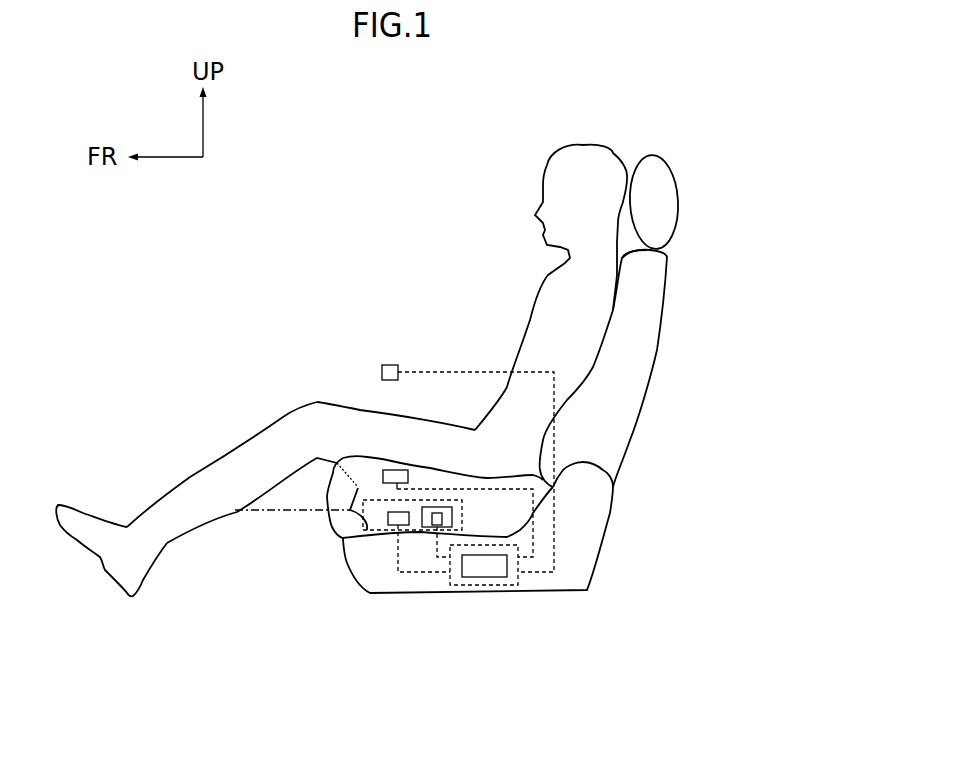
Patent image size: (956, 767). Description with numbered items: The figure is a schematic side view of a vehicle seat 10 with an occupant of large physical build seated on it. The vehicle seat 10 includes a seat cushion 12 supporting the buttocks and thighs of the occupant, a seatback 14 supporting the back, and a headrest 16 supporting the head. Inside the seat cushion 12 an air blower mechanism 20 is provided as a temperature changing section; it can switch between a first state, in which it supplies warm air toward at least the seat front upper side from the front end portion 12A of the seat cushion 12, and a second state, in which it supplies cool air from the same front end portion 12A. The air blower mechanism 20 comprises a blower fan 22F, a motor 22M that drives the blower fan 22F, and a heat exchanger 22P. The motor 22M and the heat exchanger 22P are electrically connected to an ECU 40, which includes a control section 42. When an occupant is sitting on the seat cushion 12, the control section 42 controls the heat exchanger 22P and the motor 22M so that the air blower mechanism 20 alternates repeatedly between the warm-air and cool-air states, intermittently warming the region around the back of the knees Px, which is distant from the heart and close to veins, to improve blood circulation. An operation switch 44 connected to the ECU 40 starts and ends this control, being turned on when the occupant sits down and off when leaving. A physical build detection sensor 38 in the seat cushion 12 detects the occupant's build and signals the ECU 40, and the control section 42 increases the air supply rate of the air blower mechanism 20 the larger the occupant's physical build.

The vehicle seat 10 is at (730, 212).
The seat cushion 12 is at (472, 457).
The front end portion 12A is at (345, 450).
The seatback 14 is at (660, 347).
The headrest 16 is at (677, 188).
The air blower mechanism 20 is at (343, 523).
The blower fan 22F is at (453, 512).
The motor 22M is at (442, 520).
The heat exchanger 22P is at (390, 517).
The physical build detection sensor 38 is at (408, 477).
The ECU 40 is at (503, 585).
The control section 42 is at (483, 577).
The operation switch 44 is at (393, 362).
The back of the knees Px is at (322, 464).